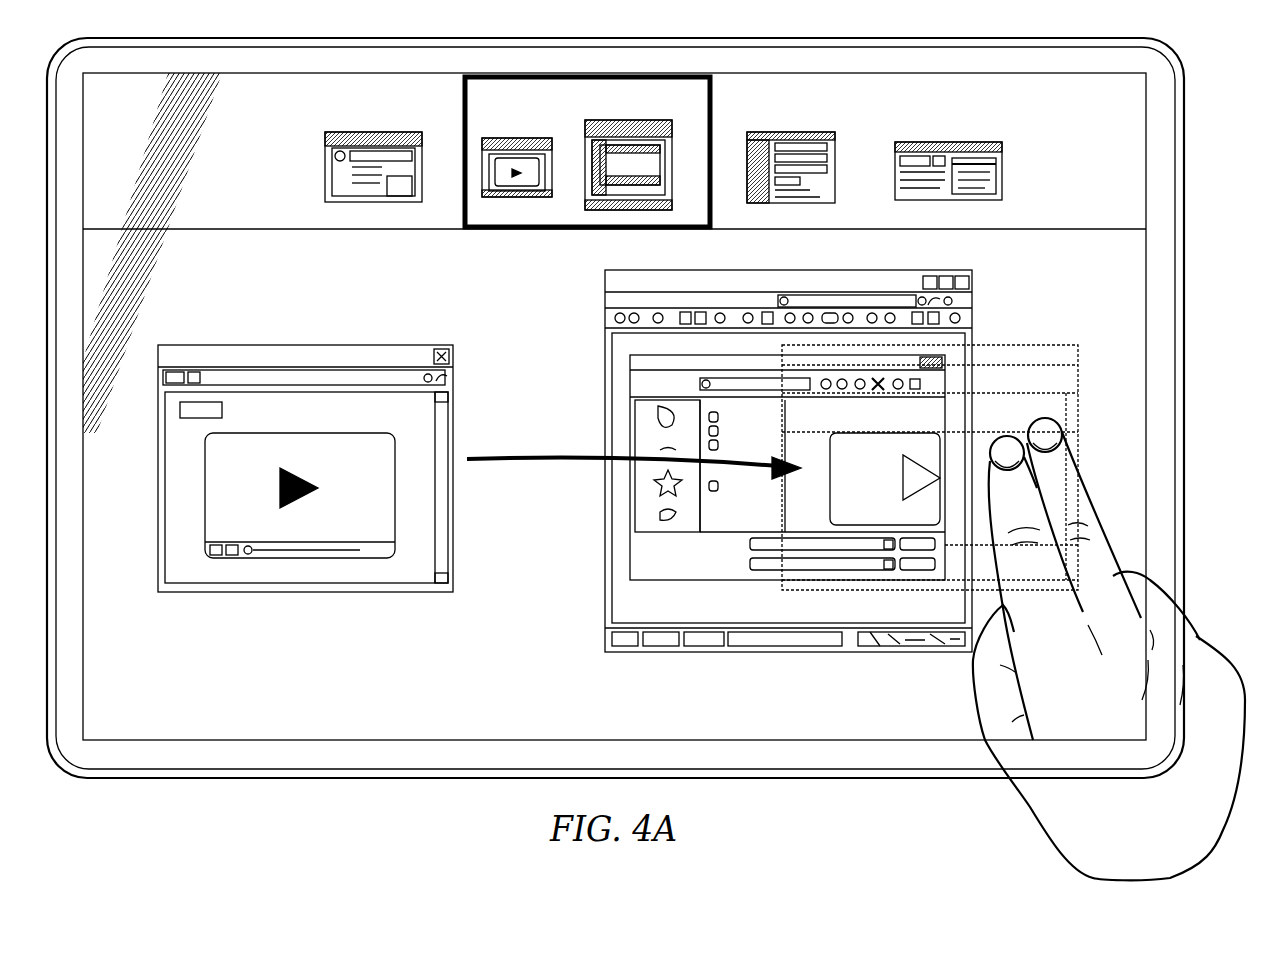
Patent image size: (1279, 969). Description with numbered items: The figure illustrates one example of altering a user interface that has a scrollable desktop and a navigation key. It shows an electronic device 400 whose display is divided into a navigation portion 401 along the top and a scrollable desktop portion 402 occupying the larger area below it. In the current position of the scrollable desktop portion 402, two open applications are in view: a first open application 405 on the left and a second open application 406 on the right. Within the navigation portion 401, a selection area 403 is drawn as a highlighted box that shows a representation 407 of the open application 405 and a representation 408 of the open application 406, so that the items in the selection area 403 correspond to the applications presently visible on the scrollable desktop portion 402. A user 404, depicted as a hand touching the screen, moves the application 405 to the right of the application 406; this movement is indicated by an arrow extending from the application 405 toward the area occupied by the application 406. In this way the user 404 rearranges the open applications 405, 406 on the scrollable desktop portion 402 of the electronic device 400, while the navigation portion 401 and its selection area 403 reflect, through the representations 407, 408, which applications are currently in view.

The electronic device 400 is at (1193, 276).
The navigation portion 401 is at (1130, 156).
The scrollable desktop portion 402 is at (1130, 370).
The selection area 403 is at (462, 115).
The user 404 is at (1205, 629).
The open application 405 is at (265, 345).
The open application 406 is at (975, 303).
The representation 407 is at (517, 138).
The representation 408 is at (650, 120).